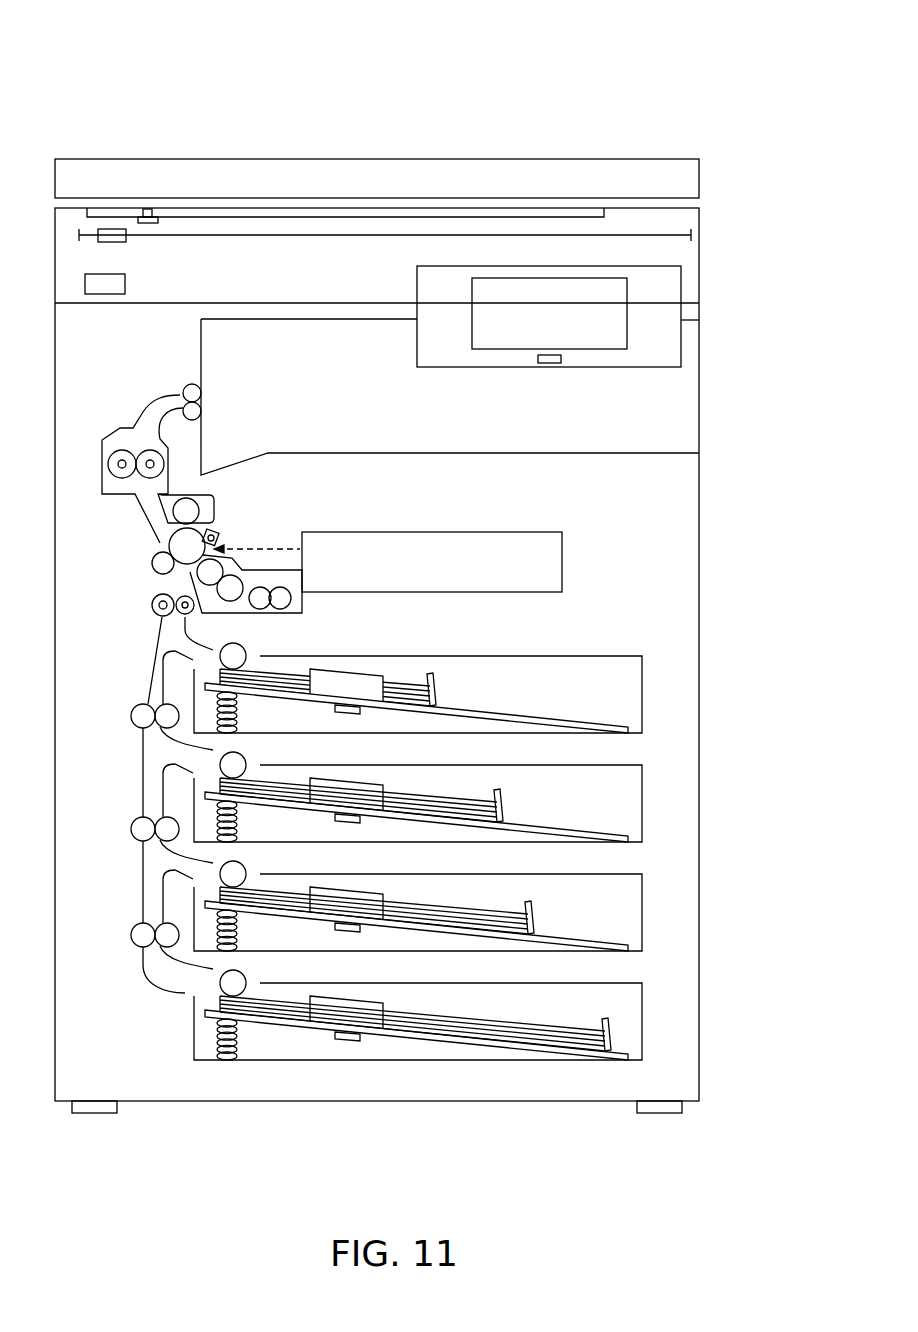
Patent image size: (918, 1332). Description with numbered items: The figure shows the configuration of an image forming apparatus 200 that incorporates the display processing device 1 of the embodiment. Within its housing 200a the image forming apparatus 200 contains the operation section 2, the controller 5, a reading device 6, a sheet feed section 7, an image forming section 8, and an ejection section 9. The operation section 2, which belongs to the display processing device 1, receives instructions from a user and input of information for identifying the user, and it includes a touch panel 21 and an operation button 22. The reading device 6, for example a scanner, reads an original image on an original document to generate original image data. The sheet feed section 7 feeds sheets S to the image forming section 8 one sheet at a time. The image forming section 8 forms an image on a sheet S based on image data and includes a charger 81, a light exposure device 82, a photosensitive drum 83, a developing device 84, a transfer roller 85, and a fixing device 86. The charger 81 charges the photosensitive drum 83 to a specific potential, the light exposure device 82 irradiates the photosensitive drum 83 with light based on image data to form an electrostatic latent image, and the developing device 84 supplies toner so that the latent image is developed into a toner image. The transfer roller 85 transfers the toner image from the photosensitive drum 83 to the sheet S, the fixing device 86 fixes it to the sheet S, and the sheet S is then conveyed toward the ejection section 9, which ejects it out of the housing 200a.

The image forming apparatus 200 is at (83, 80).
The housing 200a is at (680, 571).
The reading device 6 is at (705, 244).
The controller 5 is at (85, 284).
The display processing device 1 is at (688, 300).
The operation section 2 is at (549, 368).
The touch panel 21 is at (503, 340).
The operation button 22 is at (558, 384).
The ejection section 9 is at (180, 387).
The image forming section 8 is at (198, 516).
The fixing device 86 is at (170, 462).
The photosensitive drum 83 is at (178, 540).
The charger 81 is at (220, 534).
The transfer roller 85 is at (152, 563).
The developing device 84 is at (302, 600).
The light exposure device 82 is at (483, 582).
The sheet feed section 7 is at (326, 832).
The sheet S is at (411, 683).